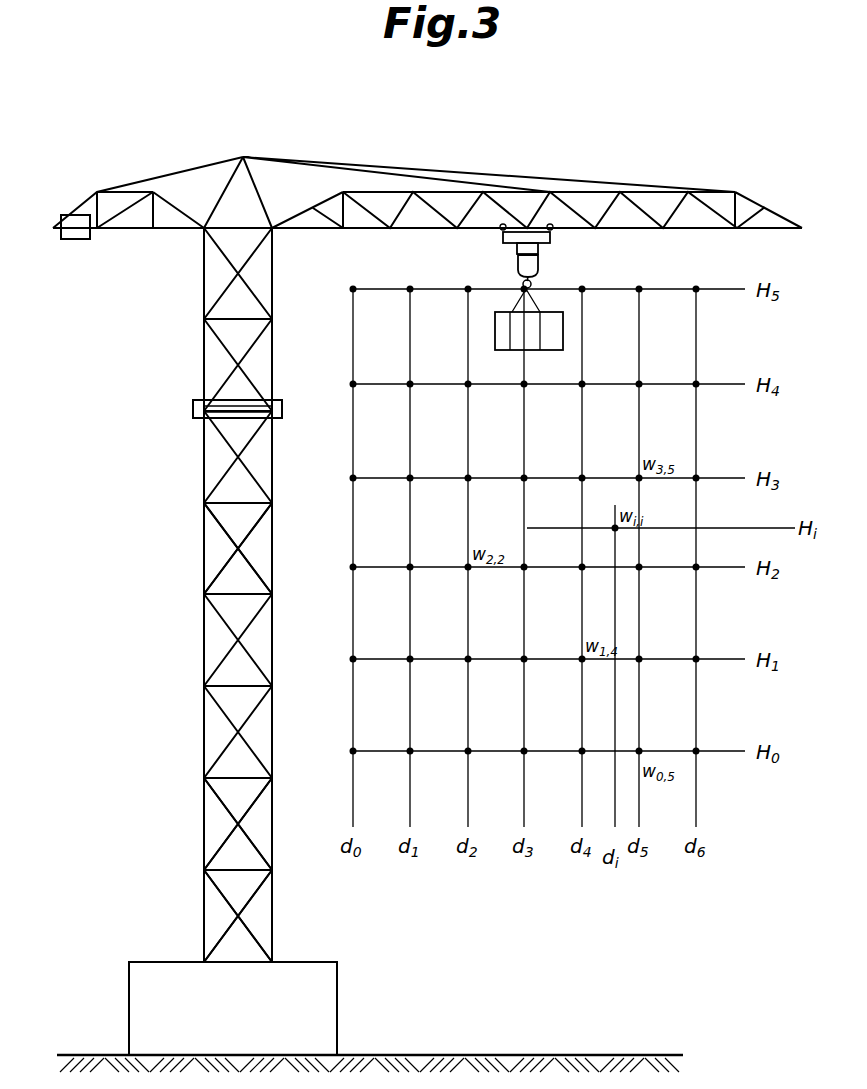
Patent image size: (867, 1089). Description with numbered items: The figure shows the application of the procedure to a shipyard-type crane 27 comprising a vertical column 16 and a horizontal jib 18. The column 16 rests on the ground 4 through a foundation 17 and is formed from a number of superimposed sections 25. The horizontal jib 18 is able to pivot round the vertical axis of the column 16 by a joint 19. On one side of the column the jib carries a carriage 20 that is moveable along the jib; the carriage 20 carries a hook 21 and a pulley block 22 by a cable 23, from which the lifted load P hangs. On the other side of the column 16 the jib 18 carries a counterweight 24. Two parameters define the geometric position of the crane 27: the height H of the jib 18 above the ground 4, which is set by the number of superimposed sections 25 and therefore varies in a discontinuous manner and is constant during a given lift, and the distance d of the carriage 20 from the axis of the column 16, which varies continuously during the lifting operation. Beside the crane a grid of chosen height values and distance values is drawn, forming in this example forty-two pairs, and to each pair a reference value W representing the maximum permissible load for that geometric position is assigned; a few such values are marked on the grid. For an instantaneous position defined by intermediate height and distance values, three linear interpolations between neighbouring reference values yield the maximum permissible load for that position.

The ground 4 is at (386, 1070).
The column 16 is at (195, 653).
The foundation 17 is at (337, 1003).
The horizontal jib 18 is at (364, 182).
The joint 19 is at (192, 408).
The carriage 20 is at (552, 238).
The hook 21 is at (531, 284).
The pulley block 22 is at (517, 268).
The cable 23 is at (516, 250).
The counterweight 24 is at (78, 241).
The superimposed sections 25 is at (220, 540).
The crane 27 is at (190, 493).
The load P is at (552, 348).